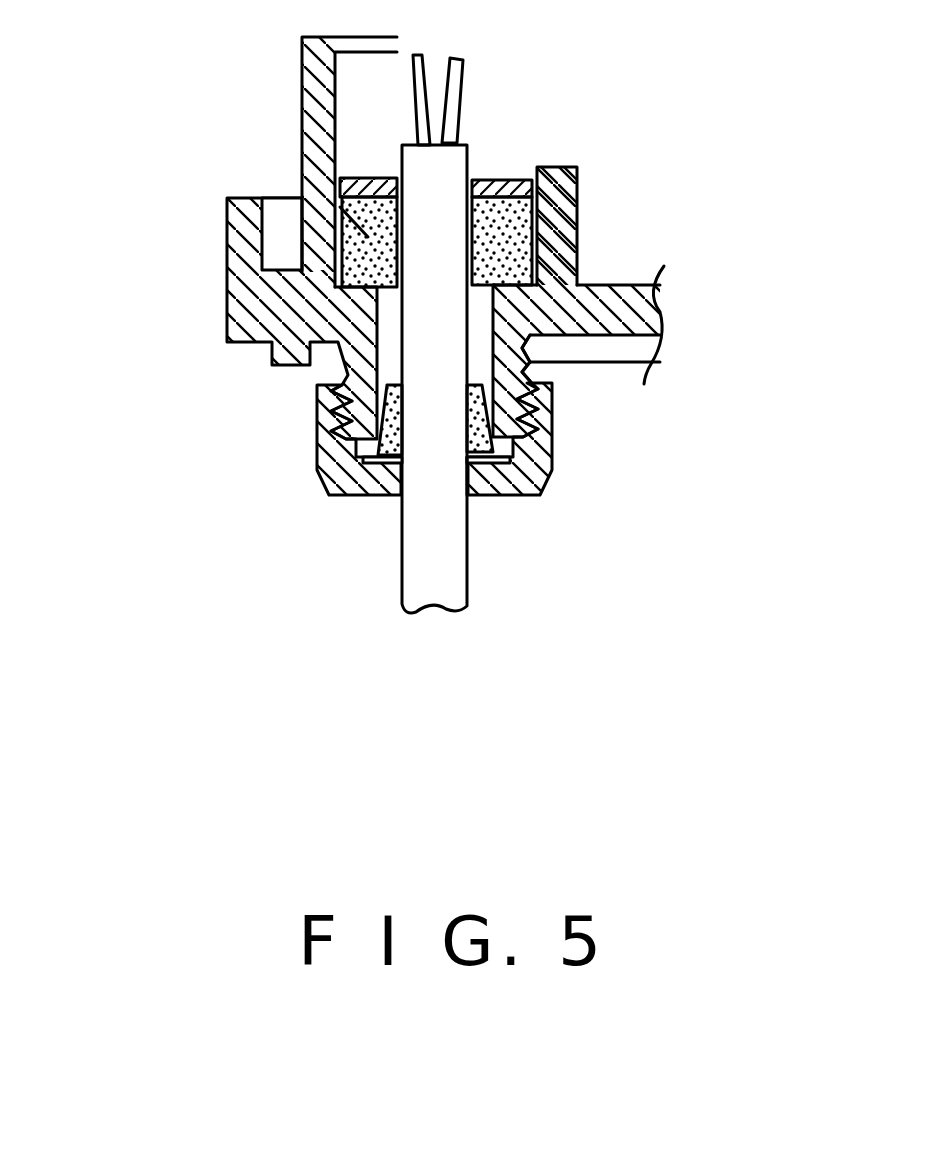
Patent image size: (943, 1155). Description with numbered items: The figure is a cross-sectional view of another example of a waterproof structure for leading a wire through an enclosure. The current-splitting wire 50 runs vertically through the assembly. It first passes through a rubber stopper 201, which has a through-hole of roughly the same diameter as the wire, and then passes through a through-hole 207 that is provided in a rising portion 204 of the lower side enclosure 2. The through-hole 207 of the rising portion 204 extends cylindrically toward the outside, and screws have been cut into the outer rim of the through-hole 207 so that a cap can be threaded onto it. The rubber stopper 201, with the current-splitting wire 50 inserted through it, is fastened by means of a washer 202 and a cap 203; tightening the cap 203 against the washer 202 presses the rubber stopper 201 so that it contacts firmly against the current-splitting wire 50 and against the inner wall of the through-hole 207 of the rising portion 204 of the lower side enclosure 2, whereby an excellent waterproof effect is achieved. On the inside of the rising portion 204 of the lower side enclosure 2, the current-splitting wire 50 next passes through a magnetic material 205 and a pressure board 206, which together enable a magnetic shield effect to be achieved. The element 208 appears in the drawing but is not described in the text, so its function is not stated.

The lower side enclosure 2 is at (198, 312).
The current-splitting wire 50 is at (425, 565).
The rubber stopper 201 is at (498, 466).
The washer 202 is at (383, 466).
The cap 203 is at (318, 483).
The rising portion 204 is at (580, 216).
The magnetic material 205 is at (301, 179).
The pressure board 206 is at (500, 178).
The through-hole 207 is at (475, 348).
The seal ring 208 is at (527, 373).